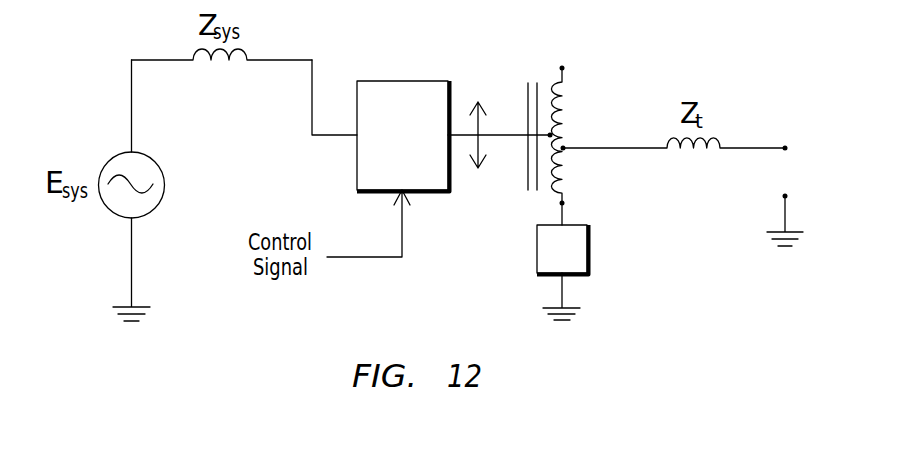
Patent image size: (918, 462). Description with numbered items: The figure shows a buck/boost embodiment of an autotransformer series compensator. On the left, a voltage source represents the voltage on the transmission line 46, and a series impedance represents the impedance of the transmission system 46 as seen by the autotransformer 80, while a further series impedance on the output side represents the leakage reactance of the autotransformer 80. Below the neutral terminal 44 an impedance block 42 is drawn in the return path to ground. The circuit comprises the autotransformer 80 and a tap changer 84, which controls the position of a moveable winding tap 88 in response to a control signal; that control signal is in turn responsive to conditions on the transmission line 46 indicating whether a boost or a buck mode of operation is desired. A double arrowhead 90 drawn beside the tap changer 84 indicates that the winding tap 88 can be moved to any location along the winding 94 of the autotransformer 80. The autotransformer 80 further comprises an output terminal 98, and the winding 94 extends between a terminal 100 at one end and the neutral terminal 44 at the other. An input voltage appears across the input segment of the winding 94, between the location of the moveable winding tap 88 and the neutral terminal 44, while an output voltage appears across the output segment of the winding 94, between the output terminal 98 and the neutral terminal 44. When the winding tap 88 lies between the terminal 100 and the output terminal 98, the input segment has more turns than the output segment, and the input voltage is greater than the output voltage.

The transmission line 46 is at (277, 60).
The tap changer 84 is at (402, 81).
The double arrowhead 90 is at (483, 125).
The moveable winding tap 88 is at (550, 136).
The autotransformer 80 is at (589, 131).
The winding 94 is at (560, 110).
The terminal 100 is at (562, 68).
The output terminal 98 is at (565, 150).
The neutral terminal 44 is at (562, 203).
The impedance 42 is at (537, 252).